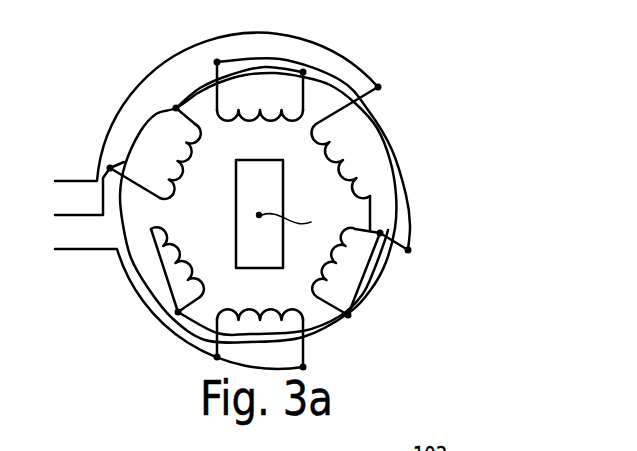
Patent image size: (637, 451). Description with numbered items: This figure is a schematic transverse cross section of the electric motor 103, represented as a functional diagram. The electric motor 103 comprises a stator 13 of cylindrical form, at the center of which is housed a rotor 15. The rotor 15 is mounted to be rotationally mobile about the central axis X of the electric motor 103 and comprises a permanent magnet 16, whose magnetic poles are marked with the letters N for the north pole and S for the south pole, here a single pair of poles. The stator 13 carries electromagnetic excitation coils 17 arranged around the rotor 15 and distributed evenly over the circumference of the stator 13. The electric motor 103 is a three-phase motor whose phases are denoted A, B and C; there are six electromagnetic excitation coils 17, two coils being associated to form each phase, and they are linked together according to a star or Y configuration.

The electric motor 103 is at (243, 186).
The stator 13 is at (384, 292).
The rotor 15 is at (259, 216).
The permanent magnet 16 is at (237, 232).
The electromagnetic excitation coils 17 is at (183, 165).